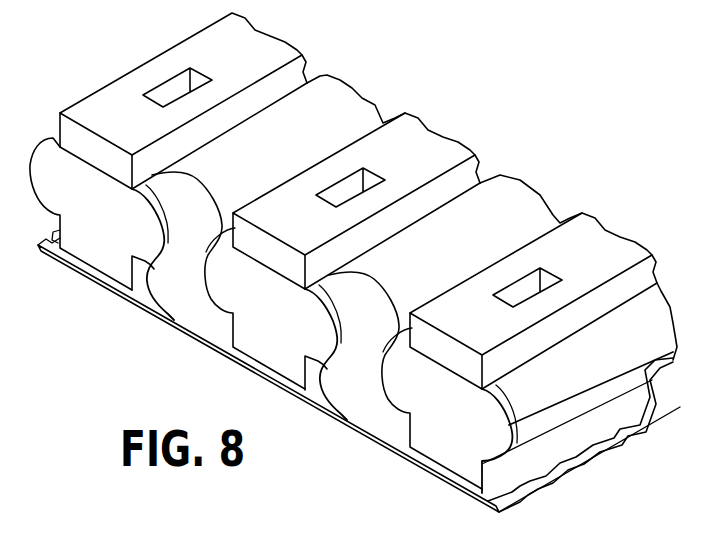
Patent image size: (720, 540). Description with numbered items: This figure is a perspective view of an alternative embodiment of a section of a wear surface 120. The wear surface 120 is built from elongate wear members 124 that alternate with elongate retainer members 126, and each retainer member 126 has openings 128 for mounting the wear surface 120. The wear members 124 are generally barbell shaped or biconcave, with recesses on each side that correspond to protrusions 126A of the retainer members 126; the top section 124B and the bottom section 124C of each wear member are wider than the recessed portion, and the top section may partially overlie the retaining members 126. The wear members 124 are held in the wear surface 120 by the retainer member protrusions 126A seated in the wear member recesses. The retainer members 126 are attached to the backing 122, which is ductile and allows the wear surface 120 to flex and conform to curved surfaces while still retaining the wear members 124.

The wear surface 120 is at (458, 101).
The backing 122 is at (580, 462).
The elongate wear member 124 is at (182, 293).
The top section of the wear member 124B is at (362, 307).
The bottom section of the wear member 124C is at (358, 412).
The elongate retainer member 126 is at (97, 245).
The protrusion of the retainer member 126A is at (398, 380).
The opening 128 is at (197, 80).